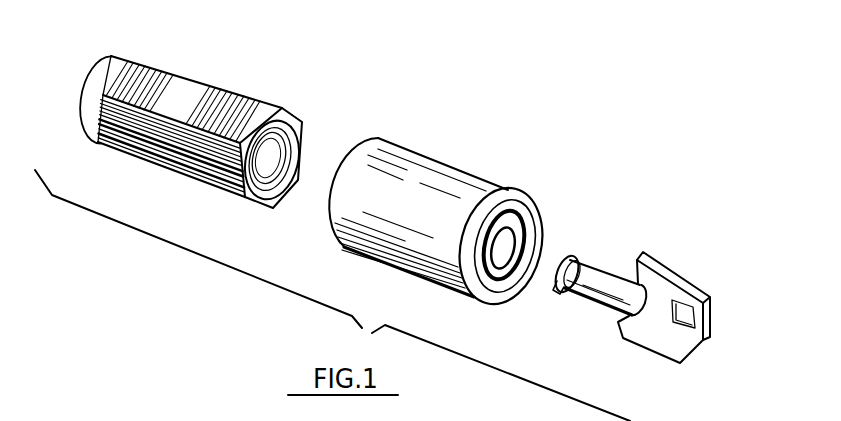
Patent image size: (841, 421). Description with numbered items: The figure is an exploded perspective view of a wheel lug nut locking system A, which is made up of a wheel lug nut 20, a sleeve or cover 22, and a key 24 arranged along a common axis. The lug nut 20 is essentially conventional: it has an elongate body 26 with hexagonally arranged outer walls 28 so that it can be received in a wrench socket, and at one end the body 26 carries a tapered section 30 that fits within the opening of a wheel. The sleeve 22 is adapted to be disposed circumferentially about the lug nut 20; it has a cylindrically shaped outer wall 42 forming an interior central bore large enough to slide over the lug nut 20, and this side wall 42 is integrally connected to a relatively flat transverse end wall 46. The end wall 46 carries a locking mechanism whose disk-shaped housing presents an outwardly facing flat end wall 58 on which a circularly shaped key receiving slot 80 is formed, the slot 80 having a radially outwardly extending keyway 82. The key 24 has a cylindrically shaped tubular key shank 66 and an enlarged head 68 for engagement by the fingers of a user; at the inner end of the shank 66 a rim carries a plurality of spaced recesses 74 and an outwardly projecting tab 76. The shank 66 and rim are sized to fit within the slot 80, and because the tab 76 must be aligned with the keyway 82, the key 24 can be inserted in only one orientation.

The wheel lug nut 20 is at (192, 127).
The sleeve or cover 22 is at (449, 212).
The key 24 is at (650, 282).
The body 26 is at (175, 100).
The hexagonally arranged outer walls 28 is at (219, 180).
The tapered section 30 is at (95, 82).
The cylindrically shaped outer wall 42 is at (397, 168).
The transverse end wall 46 is at (540, 168).
The outwardly presented flat end wall 58 is at (490, 283).
The key shank 66 is at (596, 279).
The enlarged head 68 is at (680, 288).
The recesses 74 is at (552, 278).
The outwardly projecting tab 76 is at (573, 249).
The key receiving slot 80 is at (518, 237).
The keyway 82 is at (500, 224).
The wheel lug nut locking system A is at (447, 92).